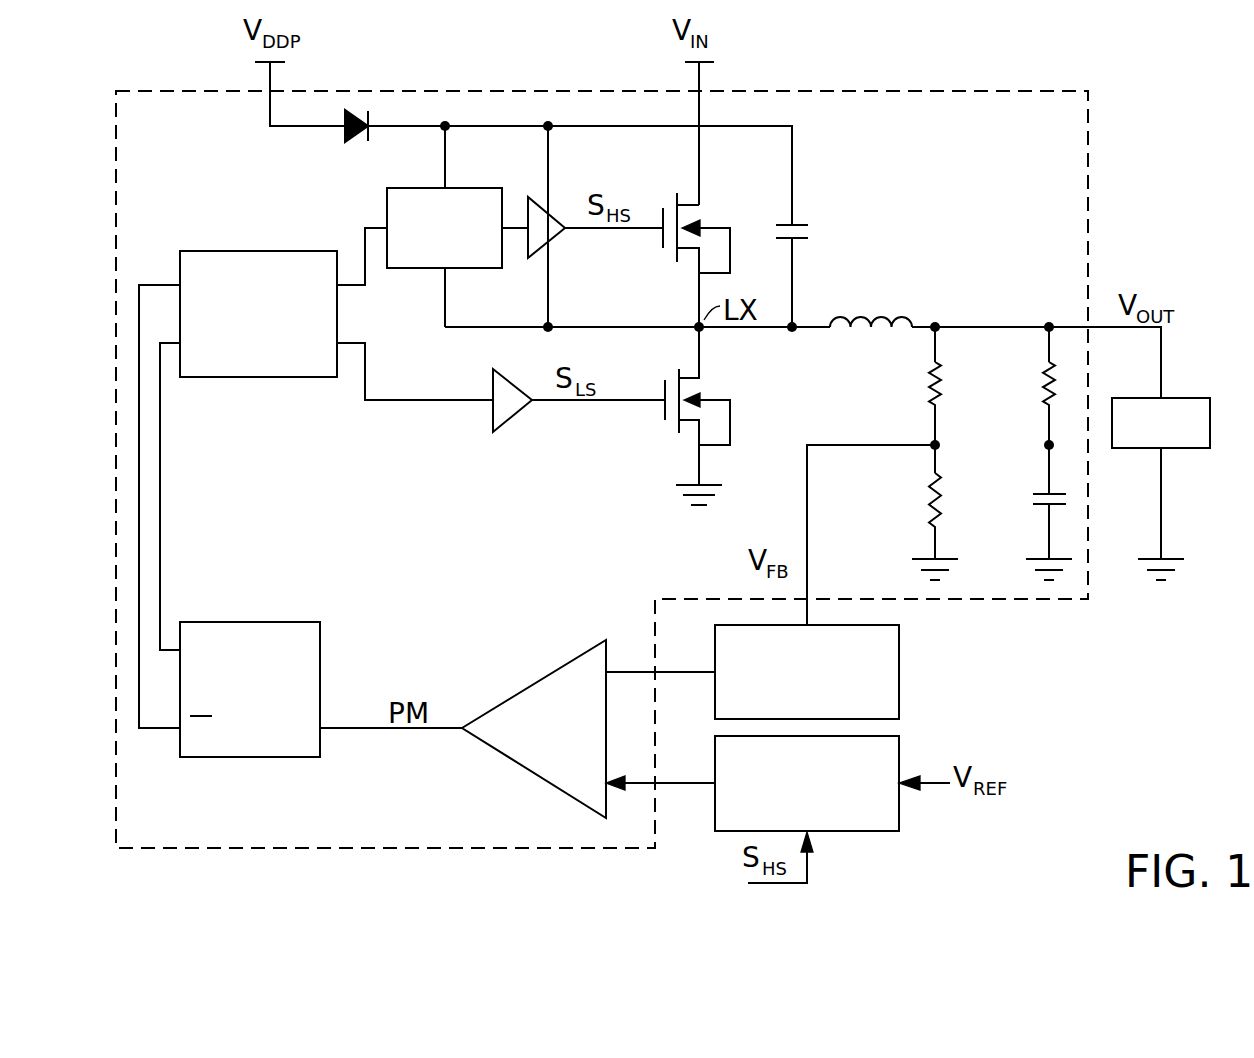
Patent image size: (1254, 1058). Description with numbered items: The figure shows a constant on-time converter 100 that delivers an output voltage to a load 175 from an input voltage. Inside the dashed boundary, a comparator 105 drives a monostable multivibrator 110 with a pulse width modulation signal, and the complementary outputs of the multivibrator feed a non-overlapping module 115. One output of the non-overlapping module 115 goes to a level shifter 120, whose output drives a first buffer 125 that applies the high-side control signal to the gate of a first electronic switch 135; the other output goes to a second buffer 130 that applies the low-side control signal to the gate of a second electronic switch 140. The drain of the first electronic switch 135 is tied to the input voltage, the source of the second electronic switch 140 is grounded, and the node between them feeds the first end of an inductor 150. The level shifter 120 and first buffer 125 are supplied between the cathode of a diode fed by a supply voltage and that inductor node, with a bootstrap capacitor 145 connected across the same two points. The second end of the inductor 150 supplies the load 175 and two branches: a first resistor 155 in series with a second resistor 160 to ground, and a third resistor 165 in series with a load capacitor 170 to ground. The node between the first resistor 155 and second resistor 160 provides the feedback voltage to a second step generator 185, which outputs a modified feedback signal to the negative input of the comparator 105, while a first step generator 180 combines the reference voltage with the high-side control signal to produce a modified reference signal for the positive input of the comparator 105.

The constant on-time (COT) converter 100 is at (95, 38).
The comparator 105 is at (600, 643).
The monostable multivibrator 110 is at (293, 622).
The non-overlapping module 115 is at (293, 251).
The level shifter 120 is at (406, 188).
The first buffer 125 is at (550, 212).
The second buffer 130 is at (493, 378).
The first electronic switch 135 is at (703, 216).
The second electronic switch 140 is at (705, 393).
The capacitor 145 is at (812, 226).
The inductor 150 is at (868, 312).
The first resistor 155 is at (920, 396).
The second resistor 160 is at (920, 508).
The third resistor 165 is at (1033, 396).
The load capacitor 170 is at (1033, 508).
The load 175 is at (1180, 398).
The first step generator 180 is at (712, 806).
The second step generator 185 is at (899, 670).